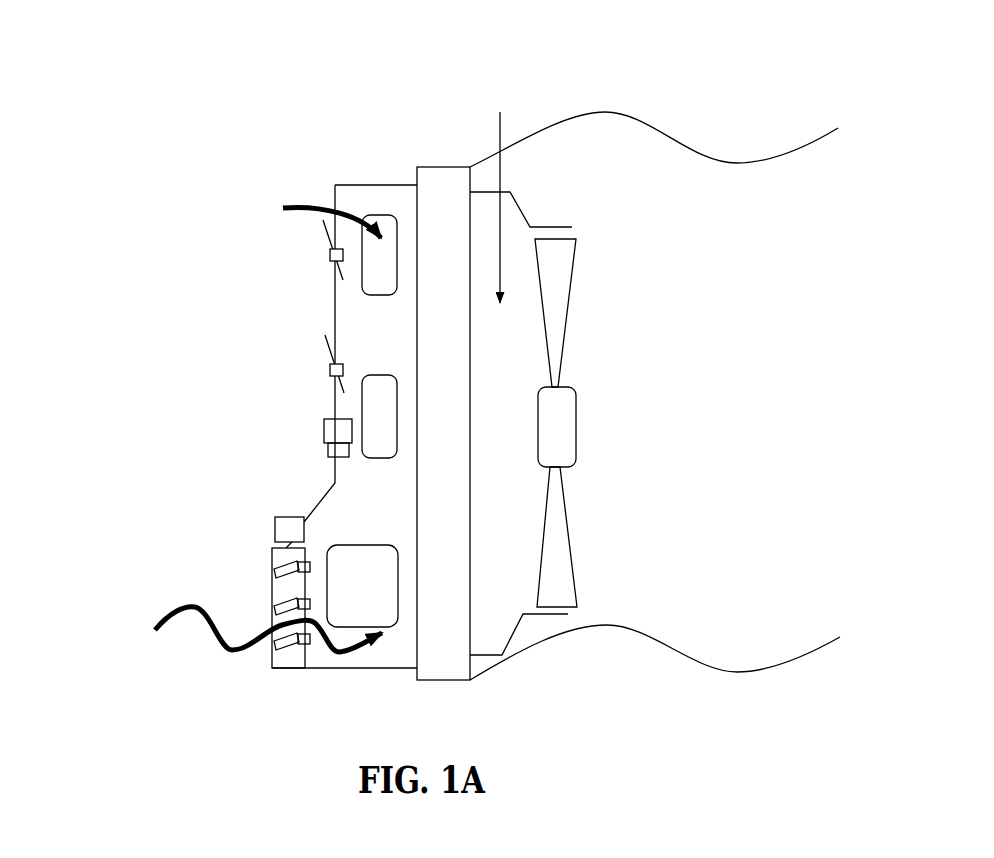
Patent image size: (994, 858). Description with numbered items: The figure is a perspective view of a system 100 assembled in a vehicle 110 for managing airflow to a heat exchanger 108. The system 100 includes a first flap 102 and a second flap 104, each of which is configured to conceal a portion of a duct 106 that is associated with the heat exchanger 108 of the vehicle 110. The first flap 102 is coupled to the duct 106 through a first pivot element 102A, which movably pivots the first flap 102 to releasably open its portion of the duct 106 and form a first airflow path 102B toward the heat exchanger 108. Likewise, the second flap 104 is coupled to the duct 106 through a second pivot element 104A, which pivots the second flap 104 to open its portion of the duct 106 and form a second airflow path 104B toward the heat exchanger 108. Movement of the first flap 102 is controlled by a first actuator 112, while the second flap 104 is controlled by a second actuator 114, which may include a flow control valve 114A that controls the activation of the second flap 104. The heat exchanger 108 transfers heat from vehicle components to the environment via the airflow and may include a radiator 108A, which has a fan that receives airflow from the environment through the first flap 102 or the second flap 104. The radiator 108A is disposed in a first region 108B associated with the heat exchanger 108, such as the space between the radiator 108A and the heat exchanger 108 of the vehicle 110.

The system 100 is at (90, 60).
The first flap 102 is at (328, 643).
The first pivot element 102A is at (308, 570).
The first airflow path 102B is at (217, 640).
The second flap 104 is at (230, 306).
The second pivot element 104A is at (328, 367).
The second airflow path 104B is at (293, 205).
The duct 106 is at (368, 510).
The heat exchanger 108 is at (518, 377).
The radiator 108A is at (560, 347).
The first region 108B is at (502, 189).
The vehicle 110 is at (737, 158).
The first actuator 112 is at (275, 525).
The second actuator 114 is at (199, 431).
The flow control valve 114A is at (328, 452).